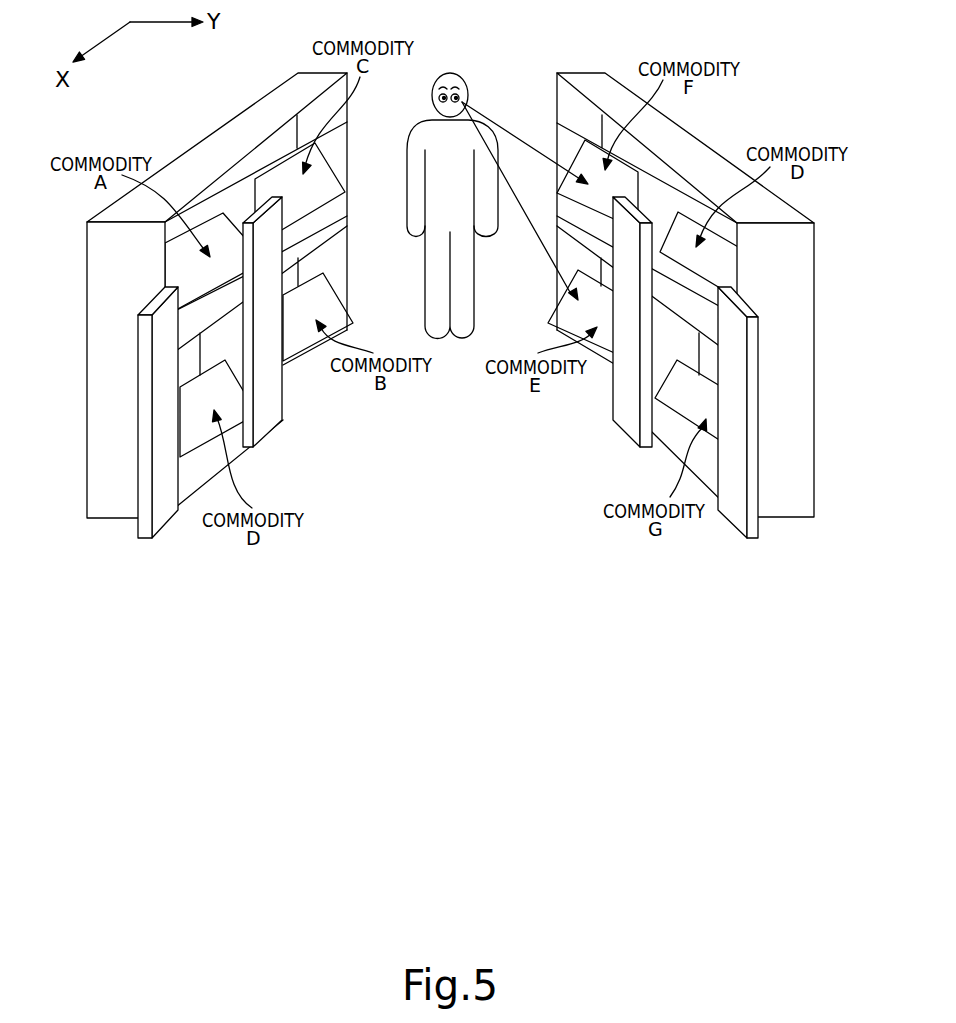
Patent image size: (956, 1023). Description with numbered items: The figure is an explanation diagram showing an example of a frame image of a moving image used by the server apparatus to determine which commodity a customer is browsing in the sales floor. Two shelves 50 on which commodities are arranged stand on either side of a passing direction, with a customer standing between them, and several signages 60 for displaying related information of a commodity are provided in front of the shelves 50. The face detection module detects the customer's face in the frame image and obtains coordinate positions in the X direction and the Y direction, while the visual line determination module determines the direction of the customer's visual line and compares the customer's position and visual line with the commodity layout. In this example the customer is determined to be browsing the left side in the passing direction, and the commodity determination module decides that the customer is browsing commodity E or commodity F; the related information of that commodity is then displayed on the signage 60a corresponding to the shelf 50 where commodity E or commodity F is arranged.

The shelf 50 is at (185, 160).
The signage 60 is at (448, 392).
The signage 60a is at (614, 402).